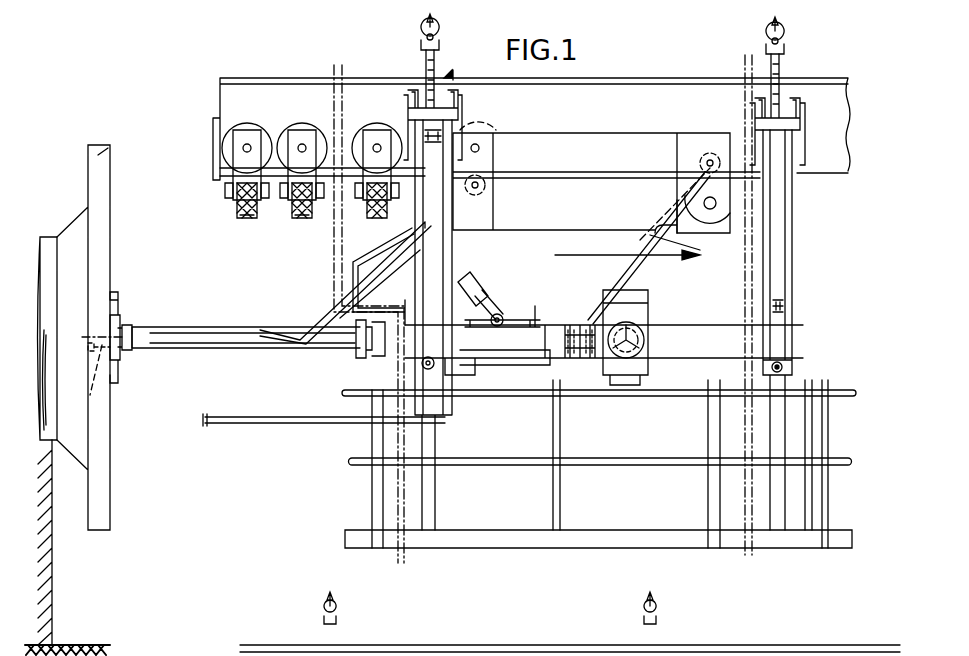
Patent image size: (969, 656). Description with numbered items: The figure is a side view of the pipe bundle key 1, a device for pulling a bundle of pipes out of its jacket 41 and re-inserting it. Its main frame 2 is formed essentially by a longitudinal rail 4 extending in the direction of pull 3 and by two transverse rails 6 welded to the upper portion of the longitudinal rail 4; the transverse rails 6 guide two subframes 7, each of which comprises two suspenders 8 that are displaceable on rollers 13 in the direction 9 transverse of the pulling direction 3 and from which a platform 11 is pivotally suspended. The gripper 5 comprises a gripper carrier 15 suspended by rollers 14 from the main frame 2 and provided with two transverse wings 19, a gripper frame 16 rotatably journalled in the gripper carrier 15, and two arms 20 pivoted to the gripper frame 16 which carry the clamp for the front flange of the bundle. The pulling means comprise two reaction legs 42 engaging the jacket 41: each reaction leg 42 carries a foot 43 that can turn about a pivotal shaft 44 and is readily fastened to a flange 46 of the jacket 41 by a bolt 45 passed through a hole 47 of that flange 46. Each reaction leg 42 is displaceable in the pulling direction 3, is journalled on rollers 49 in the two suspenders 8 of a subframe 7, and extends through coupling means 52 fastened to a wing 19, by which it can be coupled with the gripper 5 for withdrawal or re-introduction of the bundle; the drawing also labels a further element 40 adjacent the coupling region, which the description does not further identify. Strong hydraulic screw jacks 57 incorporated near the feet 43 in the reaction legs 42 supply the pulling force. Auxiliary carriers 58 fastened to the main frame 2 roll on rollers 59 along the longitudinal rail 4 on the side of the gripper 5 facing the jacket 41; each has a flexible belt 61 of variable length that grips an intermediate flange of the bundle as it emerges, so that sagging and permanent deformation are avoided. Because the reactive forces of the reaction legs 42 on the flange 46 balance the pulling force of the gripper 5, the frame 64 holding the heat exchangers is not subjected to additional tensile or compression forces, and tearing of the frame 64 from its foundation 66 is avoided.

The pipe bundle key 1 is at (838, 70).
The main frame 2 is at (636, 74).
The direction of pull 3 is at (568, 254).
The longitudinal rail 4 is at (592, 95).
The gripper 5 is at (148, 292).
The transverse rails 6 is at (424, 53).
The subframe 7 is at (455, 70).
The suspender 8 is at (415, 272).
The transverse direction 9 is at (640, 652).
The platform 11 is at (365, 518).
The rollers 13 is at (420, 90).
The rollers 14 is at (478, 183).
The gripper carrier 15 is at (455, 395).
The gripper frame 16 is at (378, 299).
The wings 19 is at (530, 328).
The arms 20 is at (325, 262).
The motor 40 is at (632, 340).
The jacket 41 is at (55, 237).
The reaction leg 42 is at (356, 347).
The foot 43 is at (118, 357).
The pivotal shaft 44 is at (108, 335).
The bolt 45 is at (86, 350).
The flange 46 is at (110, 145).
The hole 47 is at (90, 395).
The rollers 49 is at (440, 360).
The coupling means 52 is at (501, 300).
The hydraulic screw jacks 57 is at (198, 340).
The auxiliary carrier 58 is at (292, 206).
The rollers 59 is at (352, 135).
The flexible belt 61 is at (247, 205).
The frame 64 is at (53, 586).
The foundation 66 is at (80, 645).